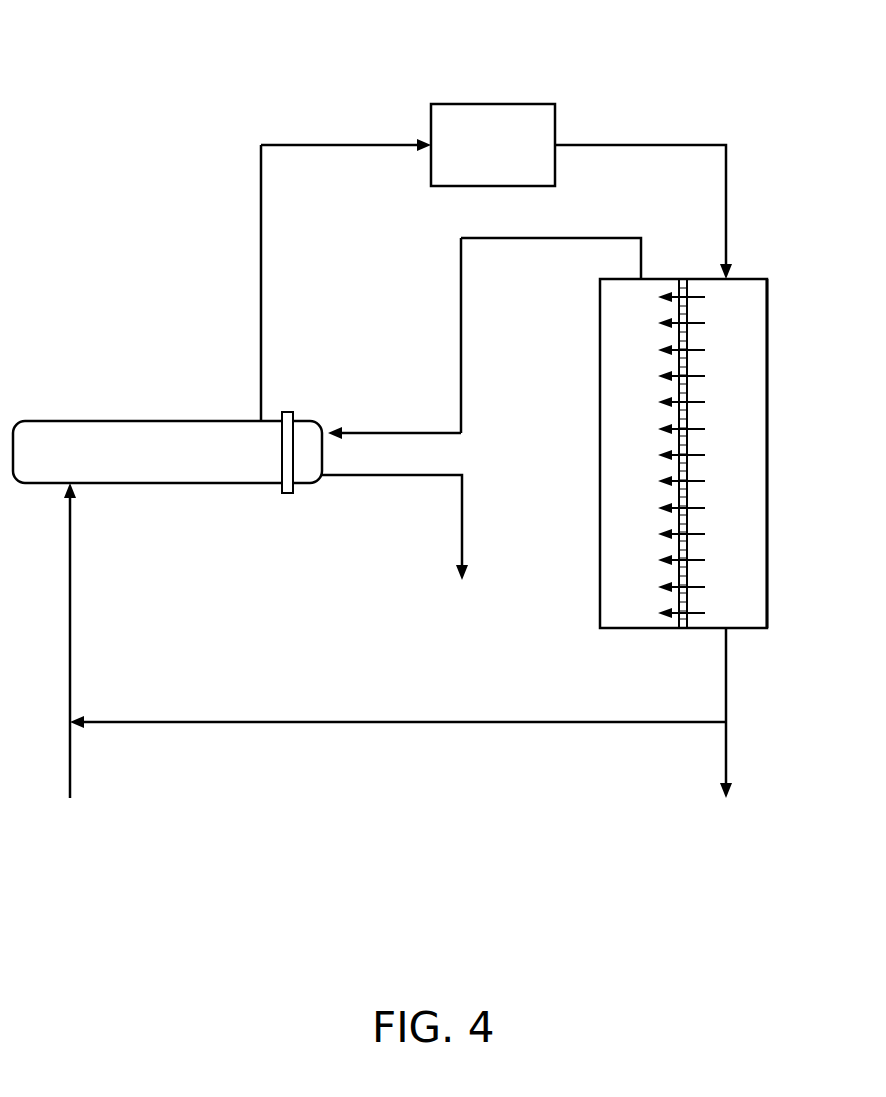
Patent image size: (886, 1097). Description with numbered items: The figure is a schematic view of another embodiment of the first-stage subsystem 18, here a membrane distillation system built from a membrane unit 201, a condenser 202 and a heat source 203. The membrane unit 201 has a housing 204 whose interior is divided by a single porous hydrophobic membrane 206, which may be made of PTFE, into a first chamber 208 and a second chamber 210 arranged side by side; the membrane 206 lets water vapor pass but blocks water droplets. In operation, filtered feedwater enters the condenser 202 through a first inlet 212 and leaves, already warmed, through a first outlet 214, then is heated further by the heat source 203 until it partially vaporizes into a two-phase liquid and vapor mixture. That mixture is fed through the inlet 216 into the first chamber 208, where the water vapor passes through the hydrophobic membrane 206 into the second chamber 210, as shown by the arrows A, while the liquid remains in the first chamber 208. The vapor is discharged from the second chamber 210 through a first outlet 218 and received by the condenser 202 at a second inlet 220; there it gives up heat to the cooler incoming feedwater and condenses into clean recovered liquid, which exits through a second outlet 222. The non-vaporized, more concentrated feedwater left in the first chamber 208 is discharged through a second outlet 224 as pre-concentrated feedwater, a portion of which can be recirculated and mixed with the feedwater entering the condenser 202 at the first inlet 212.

The first-stage subsystem 18 is at (165, 166).
The heat source 203 is at (498, 103).
The inlet 216 is at (735, 278).
The first outlet 218 is at (645, 278).
The second inlet 220 is at (326, 432).
The second outlet 222 is at (322, 478).
The condenser 202 is at (118, 420).
The first outlet 214 is at (265, 420).
The first inlet 212 is at (74, 485).
The membrane unit 201 is at (768, 392).
The housing 204 is at (767, 484).
The first chamber 208 is at (742, 542).
The hydrophobic membrane 206 is at (687, 340).
The second chamber 210 is at (622, 510).
The second outlet 224 is at (730, 632).
The arrows A is at (697, 630).